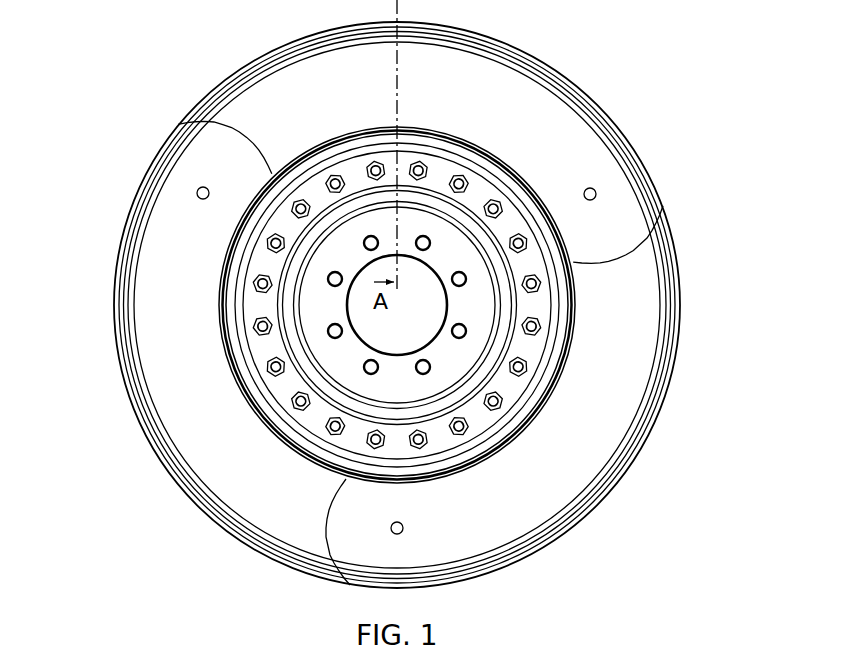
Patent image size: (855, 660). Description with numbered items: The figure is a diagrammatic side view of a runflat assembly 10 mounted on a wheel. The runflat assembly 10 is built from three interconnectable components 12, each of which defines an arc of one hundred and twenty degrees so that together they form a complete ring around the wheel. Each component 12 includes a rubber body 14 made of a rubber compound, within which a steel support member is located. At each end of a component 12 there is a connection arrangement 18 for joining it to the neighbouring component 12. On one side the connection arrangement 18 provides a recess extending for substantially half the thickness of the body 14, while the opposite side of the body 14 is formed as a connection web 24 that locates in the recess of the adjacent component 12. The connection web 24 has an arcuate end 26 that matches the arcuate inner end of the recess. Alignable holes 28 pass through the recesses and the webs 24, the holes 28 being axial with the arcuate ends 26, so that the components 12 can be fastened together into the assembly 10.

The runflat assembly 10 is at (614, 100).
The interconnectable component 12 is at (180, 405).
The rubber body 14 is at (577, 462).
The connection arrangement 18 is at (190, 169).
The connection web 24 is at (203, 157).
The arcuate end 26 is at (236, 130).
The alignable holes 28 is at (198, 196).